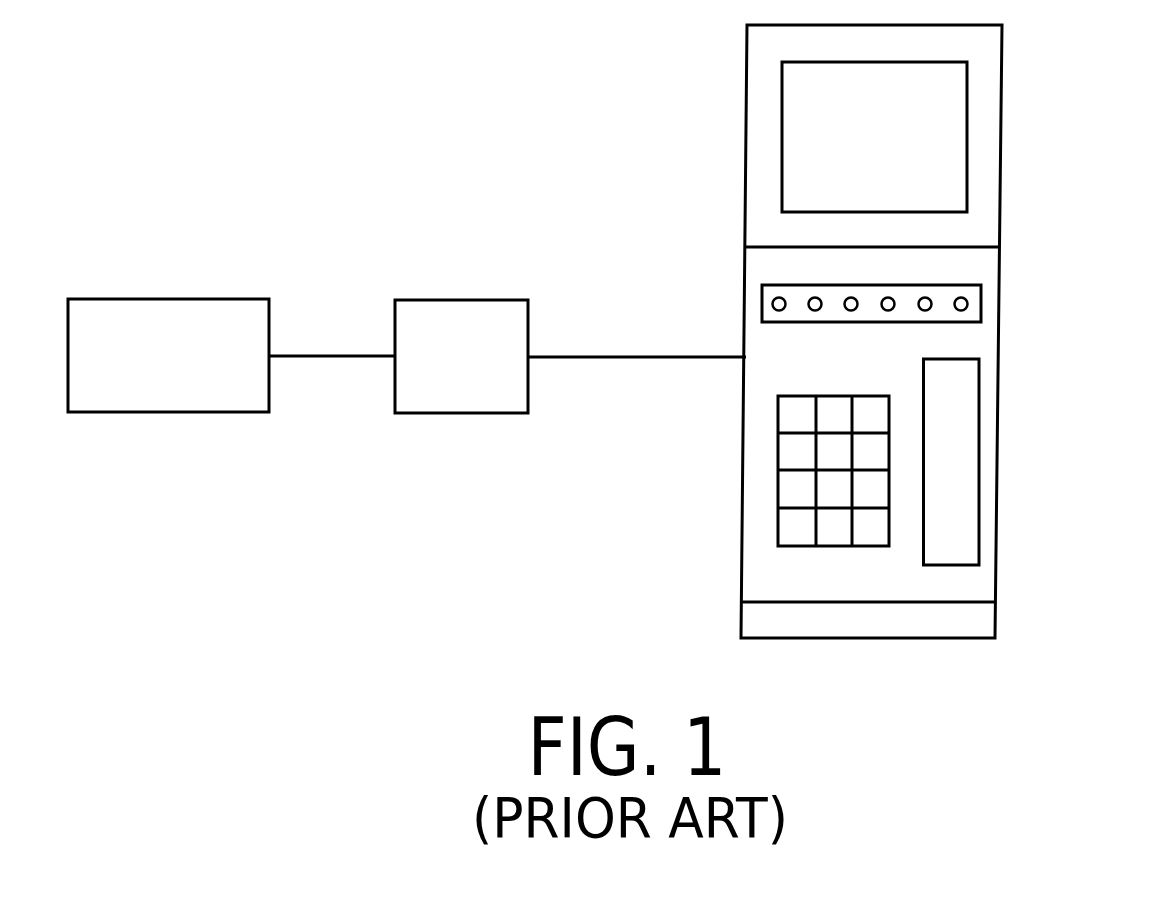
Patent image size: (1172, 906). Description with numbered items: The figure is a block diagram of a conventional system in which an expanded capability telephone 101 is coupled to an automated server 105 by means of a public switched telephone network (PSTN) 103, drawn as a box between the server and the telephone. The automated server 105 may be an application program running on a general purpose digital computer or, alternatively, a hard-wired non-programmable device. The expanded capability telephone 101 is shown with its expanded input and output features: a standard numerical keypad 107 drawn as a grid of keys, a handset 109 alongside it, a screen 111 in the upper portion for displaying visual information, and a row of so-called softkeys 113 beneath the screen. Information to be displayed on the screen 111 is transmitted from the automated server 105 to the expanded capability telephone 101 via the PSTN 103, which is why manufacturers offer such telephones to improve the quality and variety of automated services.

The expanded capability telephone 101 is at (997, 513).
The public switched telephone network (PSTN) 103 is at (468, 300).
The automated server 105 is at (222, 299).
The numerical keypad 107 is at (793, 488).
The handset 109 is at (945, 452).
The screen 111 is at (950, 136).
The softkeys 113 is at (950, 293).